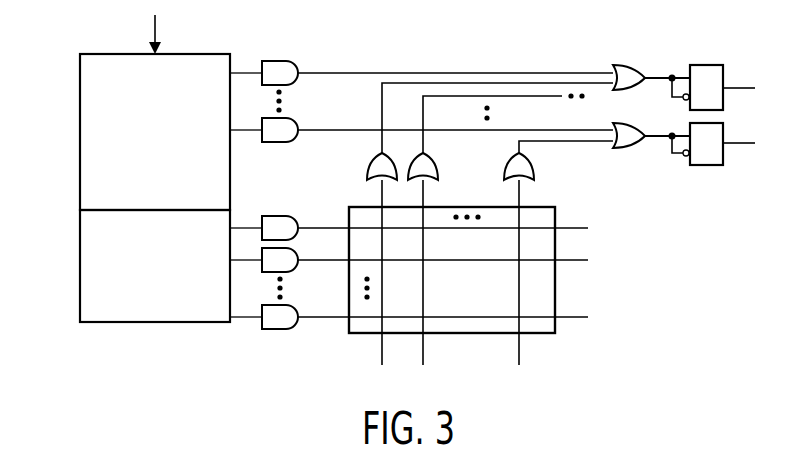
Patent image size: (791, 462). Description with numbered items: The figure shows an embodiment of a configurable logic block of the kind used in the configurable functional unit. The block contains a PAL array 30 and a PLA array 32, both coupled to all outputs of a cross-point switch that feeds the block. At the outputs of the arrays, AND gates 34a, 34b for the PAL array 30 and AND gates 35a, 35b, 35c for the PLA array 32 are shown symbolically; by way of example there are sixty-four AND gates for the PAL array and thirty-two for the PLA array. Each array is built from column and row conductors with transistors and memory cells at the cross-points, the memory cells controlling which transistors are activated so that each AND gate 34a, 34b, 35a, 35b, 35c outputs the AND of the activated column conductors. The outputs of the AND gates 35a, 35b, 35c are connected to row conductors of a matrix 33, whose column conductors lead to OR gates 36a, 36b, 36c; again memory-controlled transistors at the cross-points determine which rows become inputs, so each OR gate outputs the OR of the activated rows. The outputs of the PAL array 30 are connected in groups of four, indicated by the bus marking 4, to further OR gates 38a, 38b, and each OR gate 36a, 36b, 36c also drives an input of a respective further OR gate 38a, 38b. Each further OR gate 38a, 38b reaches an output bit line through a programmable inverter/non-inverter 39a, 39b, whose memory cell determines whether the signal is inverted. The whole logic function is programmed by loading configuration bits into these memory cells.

The PAL array 30 is at (80, 92).
The PLA array 32 is at (80, 306).
The matrix 33 is at (556, 325).
The AND gate 34a is at (287, 60).
The AND gate 34b is at (278, 143).
The AND gate 35a is at (295, 221).
The AND gate 35b is at (298, 258).
The AND gate 35c is at (297, 315).
The OR gate 36a is at (368, 164).
The OR gate 36b is at (438, 164).
The OR gate 36c is at (532, 163).
The further OR gate 38a is at (627, 63).
The further OR gate 38b is at (629, 150).
The programmable inverter/non-inverter 39a is at (713, 64).
The programmable inverter/non-inverter 39b is at (710, 166).
The bus width indicator (4 lines) 4 is at (347, 83).